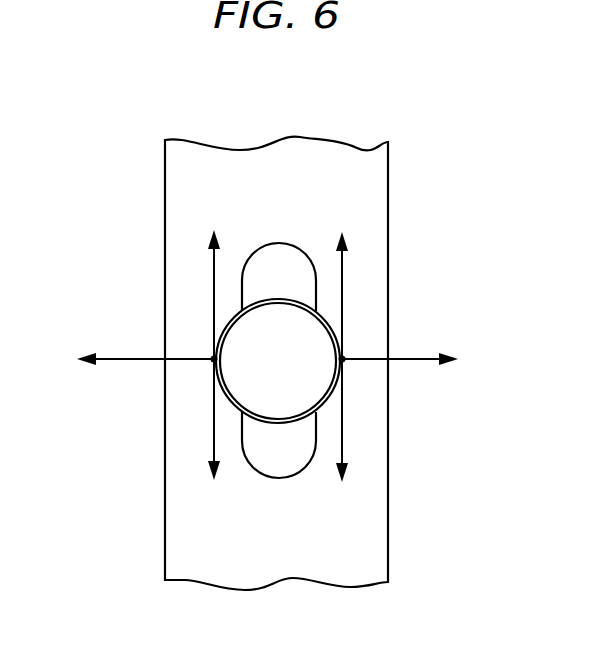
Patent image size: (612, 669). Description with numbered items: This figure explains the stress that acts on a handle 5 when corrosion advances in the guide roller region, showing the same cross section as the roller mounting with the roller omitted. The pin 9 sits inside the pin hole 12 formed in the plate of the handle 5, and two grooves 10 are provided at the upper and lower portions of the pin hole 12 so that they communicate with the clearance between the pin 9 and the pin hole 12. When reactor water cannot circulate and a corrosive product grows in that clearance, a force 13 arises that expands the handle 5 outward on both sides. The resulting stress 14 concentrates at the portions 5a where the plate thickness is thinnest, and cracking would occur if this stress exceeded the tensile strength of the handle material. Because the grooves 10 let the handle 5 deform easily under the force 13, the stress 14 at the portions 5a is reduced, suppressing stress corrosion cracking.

The handle 5 is at (362, 143).
The portions of most thin plate thickness 5a is at (214, 359).
The pin 9 is at (277, 398).
The grooves 10 is at (272, 260).
The pin hole 12 is at (222, 398).
The force 13 is at (113, 357).
The stress 14 is at (214, 262).